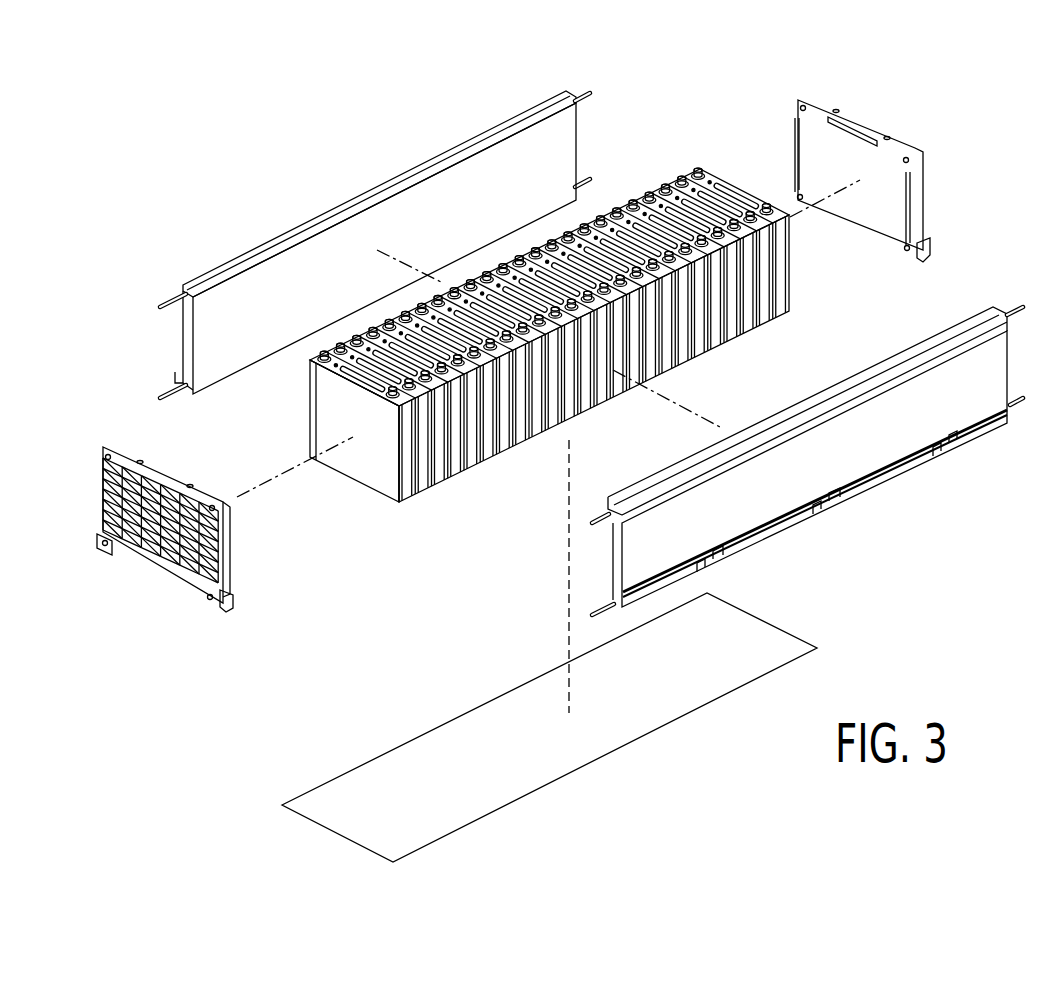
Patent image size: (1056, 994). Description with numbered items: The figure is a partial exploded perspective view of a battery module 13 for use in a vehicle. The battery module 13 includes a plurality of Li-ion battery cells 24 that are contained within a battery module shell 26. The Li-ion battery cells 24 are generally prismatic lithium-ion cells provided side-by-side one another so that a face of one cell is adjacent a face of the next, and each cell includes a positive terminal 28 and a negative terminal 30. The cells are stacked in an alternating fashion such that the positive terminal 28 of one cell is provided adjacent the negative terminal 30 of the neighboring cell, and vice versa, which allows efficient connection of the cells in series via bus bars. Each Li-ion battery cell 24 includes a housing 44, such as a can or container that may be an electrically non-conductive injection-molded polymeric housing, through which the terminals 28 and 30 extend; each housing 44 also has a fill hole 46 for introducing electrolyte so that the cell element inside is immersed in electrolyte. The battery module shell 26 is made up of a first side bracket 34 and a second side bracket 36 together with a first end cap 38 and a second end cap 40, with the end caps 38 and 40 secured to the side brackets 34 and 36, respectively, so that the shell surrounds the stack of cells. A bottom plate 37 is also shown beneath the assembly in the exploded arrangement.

The battery module 13 is at (600, 67).
The Li-ion battery cell 24 is at (720, 182).
The battery module shell 26 is at (442, 128).
The positive terminal 28 is at (603, 210).
The negative terminal 30 is at (657, 273).
The first side bracket 34 is at (353, 207).
The second side bracket 36 is at (877, 483).
The bottom plate 37 is at (355, 783).
The first end cap 38 is at (223, 553).
The second end cap 40 is at (917, 213).
The housing 44 is at (378, 470).
The fill hole 46 is at (583, 223).